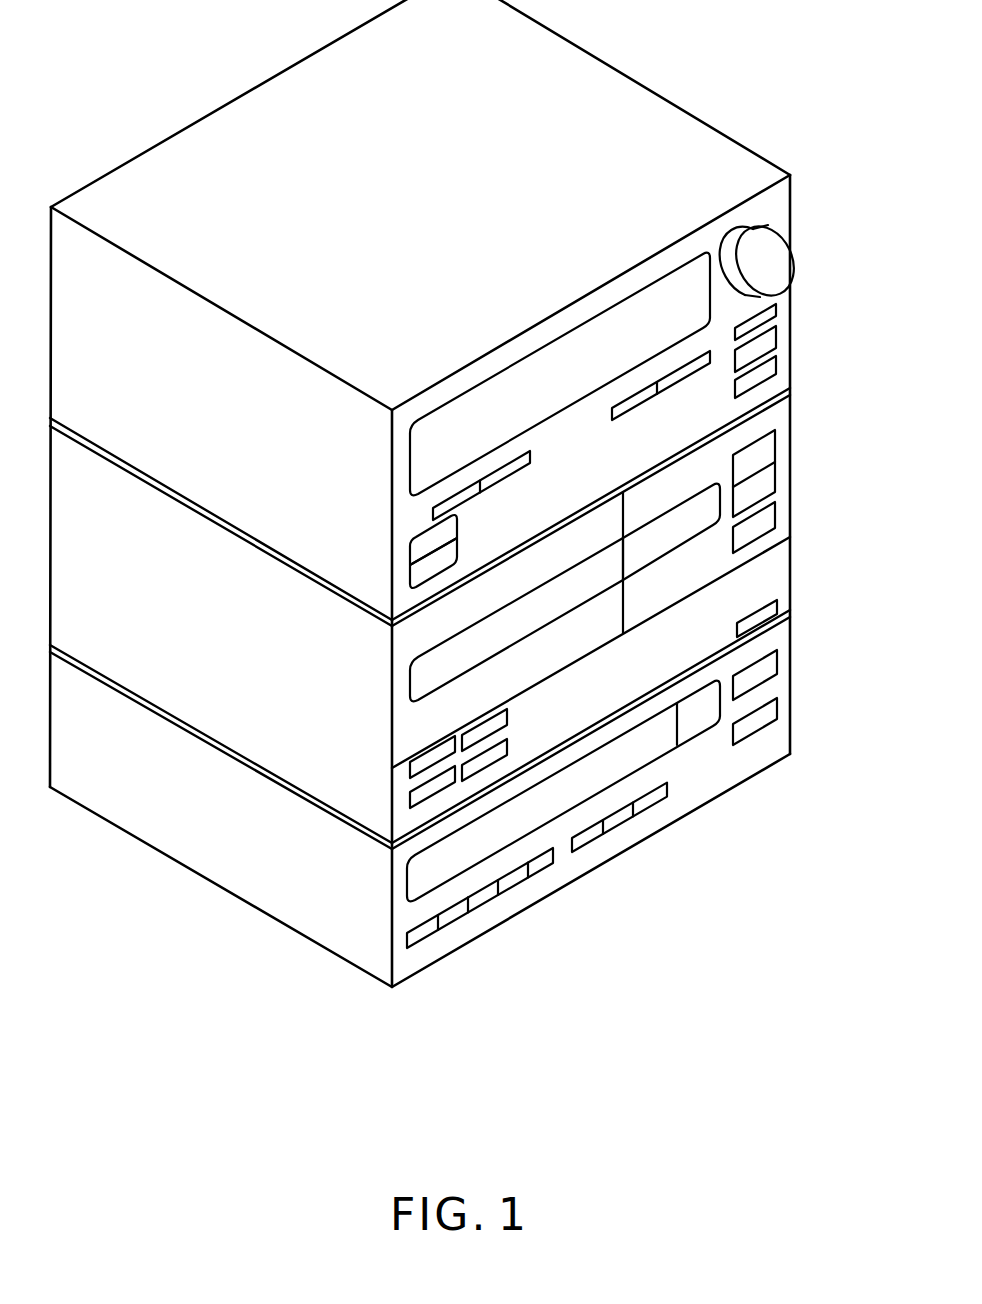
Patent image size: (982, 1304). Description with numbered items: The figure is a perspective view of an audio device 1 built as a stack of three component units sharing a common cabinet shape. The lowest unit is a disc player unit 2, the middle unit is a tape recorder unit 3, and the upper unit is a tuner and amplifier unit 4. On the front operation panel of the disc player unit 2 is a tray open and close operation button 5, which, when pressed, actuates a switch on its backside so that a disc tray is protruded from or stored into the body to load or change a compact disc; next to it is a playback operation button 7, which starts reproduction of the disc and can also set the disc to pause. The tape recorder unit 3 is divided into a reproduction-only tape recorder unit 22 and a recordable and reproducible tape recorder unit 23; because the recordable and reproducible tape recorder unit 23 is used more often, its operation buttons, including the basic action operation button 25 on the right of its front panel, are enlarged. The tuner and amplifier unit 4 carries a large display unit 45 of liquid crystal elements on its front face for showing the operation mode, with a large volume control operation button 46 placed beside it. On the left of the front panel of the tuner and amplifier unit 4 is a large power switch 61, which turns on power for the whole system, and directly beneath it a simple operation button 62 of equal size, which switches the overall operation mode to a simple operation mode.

The audio device 1 is at (757, 902).
The disc player unit 2 is at (633, 782).
The tape recorder unit 3 is at (459, 631).
The tuner and amplifier unit 4 is at (457, 393).
The tray open and close operation button 5 is at (700, 733).
The playback operation button 7 is at (777, 663).
The reproduction-only tape recorder unit 22 is at (580, 567).
The recordable and reproducible tape recorder unit 23 is at (673, 507).
The basic action operation button 25 is at (777, 447).
The display unit 45 is at (583, 316).
The volume control operation button 46 is at (783, 247).
The power switch 61 is at (410, 550).
The simple operation button 62 is at (410, 578).